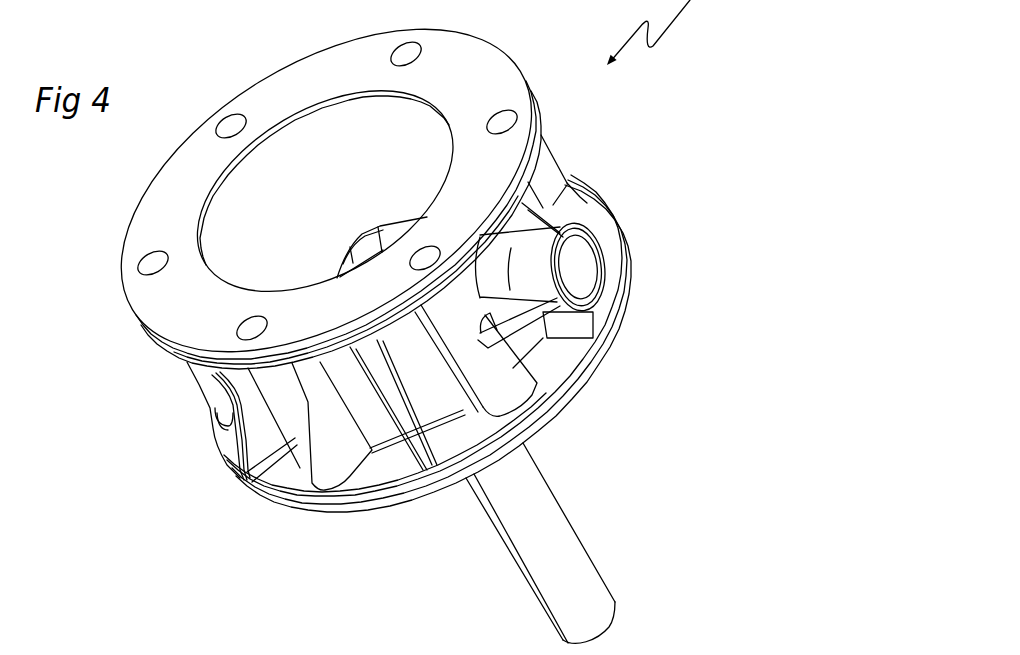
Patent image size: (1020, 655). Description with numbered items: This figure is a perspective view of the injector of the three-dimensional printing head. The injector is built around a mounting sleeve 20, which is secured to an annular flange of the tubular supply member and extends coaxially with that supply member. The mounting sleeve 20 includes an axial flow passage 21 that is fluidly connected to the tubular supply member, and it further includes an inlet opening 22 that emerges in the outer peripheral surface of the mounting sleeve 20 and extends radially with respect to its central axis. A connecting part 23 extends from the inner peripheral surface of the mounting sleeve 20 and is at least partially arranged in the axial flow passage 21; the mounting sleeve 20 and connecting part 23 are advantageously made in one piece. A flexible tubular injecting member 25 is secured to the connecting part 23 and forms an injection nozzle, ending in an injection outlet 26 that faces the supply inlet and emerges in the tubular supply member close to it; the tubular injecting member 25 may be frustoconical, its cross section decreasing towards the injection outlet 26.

The mounting sleeve 20 is at (295, 412).
The axial flow passage 21 is at (326, 160).
The inlet opening 22 is at (580, 268).
The connecting part 23 is at (340, 262).
The tubular injecting member 25 is at (543, 503).
The injection outlet 26 is at (615, 622).